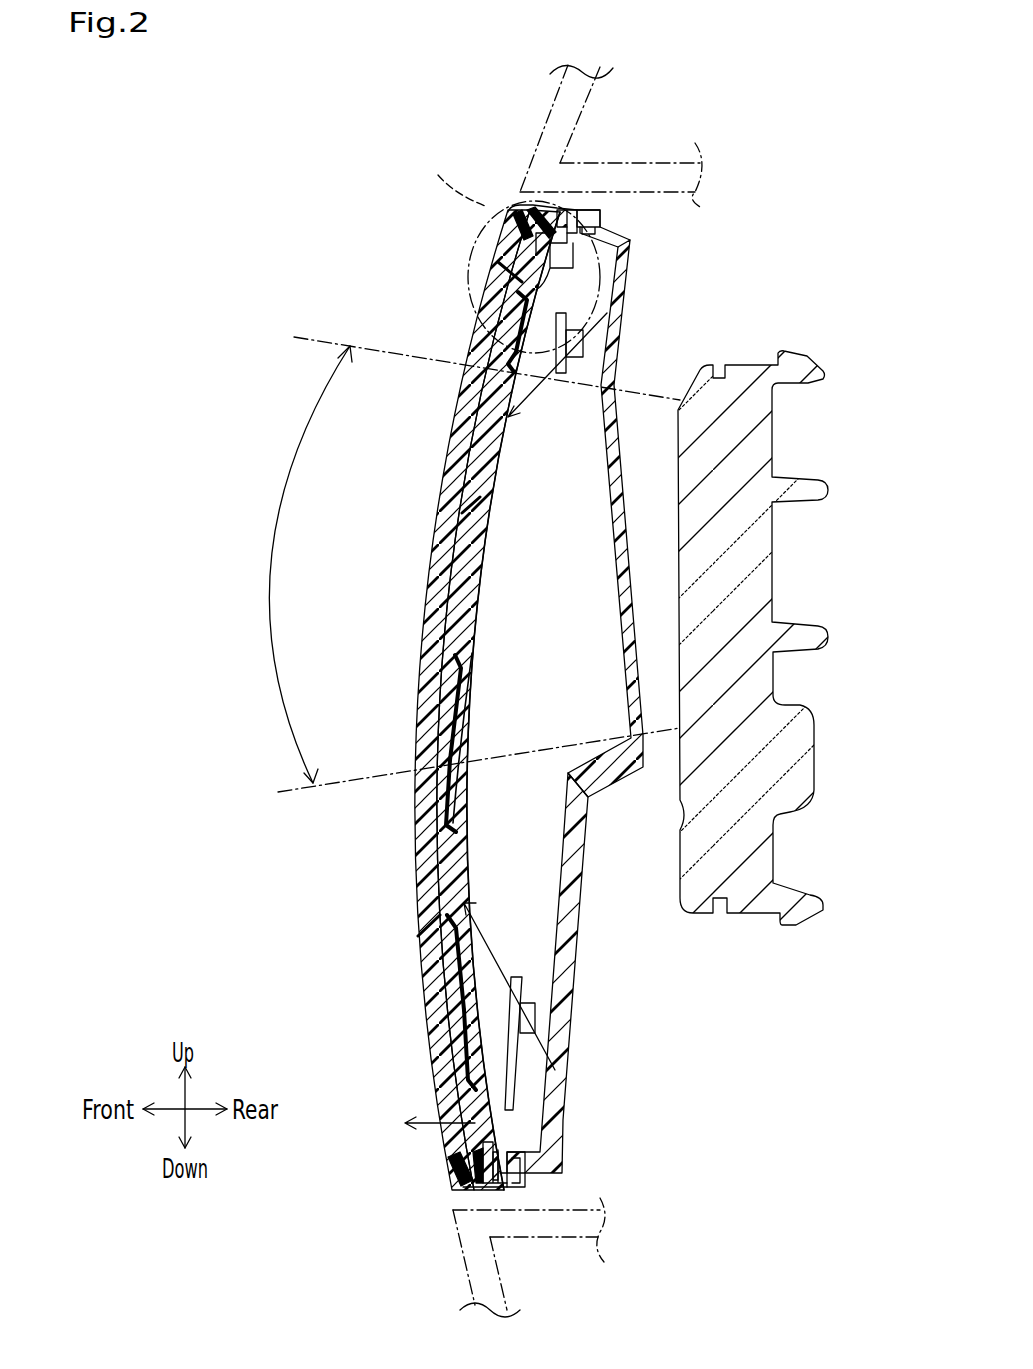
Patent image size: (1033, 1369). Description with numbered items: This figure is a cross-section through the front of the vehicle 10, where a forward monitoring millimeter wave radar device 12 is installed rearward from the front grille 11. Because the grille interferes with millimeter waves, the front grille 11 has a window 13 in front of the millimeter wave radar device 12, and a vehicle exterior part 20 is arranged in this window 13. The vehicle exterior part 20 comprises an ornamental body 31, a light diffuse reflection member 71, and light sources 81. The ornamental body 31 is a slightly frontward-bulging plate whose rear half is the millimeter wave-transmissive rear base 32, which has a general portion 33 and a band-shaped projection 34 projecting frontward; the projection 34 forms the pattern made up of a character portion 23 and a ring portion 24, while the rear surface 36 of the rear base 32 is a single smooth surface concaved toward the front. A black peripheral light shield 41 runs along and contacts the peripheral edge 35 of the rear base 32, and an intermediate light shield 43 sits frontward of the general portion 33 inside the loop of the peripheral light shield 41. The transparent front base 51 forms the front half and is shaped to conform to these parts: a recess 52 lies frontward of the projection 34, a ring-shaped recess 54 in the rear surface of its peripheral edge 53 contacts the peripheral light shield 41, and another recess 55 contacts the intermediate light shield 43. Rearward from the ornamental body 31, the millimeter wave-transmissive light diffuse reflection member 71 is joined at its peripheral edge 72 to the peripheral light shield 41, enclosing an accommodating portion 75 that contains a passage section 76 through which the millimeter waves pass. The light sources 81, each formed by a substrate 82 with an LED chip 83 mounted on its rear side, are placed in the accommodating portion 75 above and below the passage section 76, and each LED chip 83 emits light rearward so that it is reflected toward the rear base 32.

The vehicle 10 is at (771, 97).
The front grille 11 is at (553, 99).
The millimeter wave radar device 12 is at (745, 365).
The window 13 is at (472, 1195).
The vehicle exterior part 20 is at (365, 916).
The character portion 23 is at (449, 700).
The ring portion 24 is at (449, 697).
The ornamental body 31 is at (500, 603).
The rear base 32 is at (462, 712).
The general portion 33 is at (548, 292).
The projection 34 is at (515, 225).
The peripheral edge 35 is at (567, 220).
The rear surface 36 is at (477, 640).
The peripheral light shield 41 is at (545, 222).
The intermediate light shield 43 is at (510, 313).
The front base 51 is at (455, 470).
The recess 52 is at (530, 268).
The peripheral edge 53 is at (515, 223).
The ring-shaped recess 54 is at (543, 205).
The recess 55 is at (533, 343).
The light diffuse reflection member 71 is at (560, 1037).
The peripheral edge 72 is at (587, 212).
The accommodating portion 75 is at (545, 815).
The passage section 76 is at (270, 559).
The light source 81 is at (527, 445).
The substrate 82 is at (558, 375).
The LED chip 83 is at (578, 358).